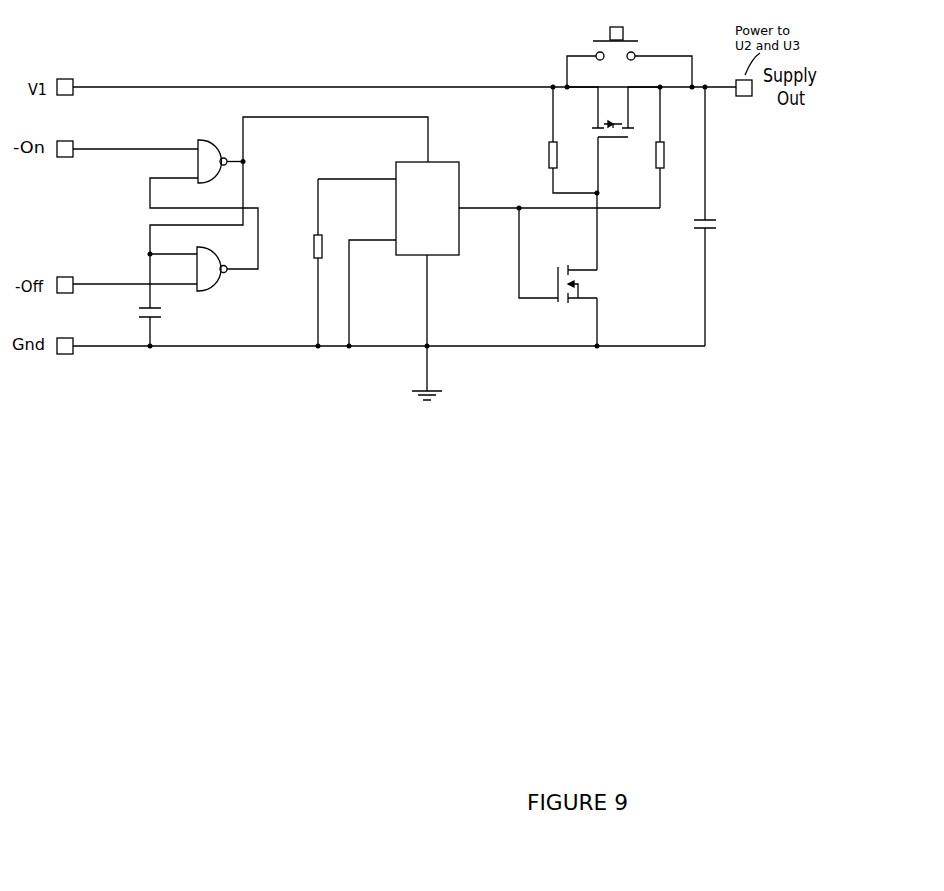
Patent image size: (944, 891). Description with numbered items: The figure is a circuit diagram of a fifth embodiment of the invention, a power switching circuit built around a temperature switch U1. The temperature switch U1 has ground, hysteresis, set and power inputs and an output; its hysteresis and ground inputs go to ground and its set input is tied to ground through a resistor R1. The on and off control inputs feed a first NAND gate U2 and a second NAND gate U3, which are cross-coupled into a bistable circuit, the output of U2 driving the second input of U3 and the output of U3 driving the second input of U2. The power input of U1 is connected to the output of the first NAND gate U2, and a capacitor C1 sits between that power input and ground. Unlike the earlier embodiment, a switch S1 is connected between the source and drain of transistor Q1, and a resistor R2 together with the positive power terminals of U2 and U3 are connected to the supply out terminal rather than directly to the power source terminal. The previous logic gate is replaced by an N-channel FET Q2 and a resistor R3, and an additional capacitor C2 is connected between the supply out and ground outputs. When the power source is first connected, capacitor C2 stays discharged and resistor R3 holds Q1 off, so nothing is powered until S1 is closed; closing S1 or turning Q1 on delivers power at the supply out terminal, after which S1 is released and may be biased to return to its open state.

The MAX6509 temperature switch U1 is at (489, 269).
The first NAND gate U2 is at (220, 152).
The second NAND gate U3 is at (214, 277).
The resistor R1 is at (306, 262).
The resistor R2 is at (674, 147).
The resistor R3 is at (557, 140).
The capacitor C1 is at (135, 300).
The additional capacitor C2 is at (717, 216).
The transistor Q1 is at (613, 140).
The N-channel FET Q2 is at (558, 269).
The switch S1 is at (629, 53).